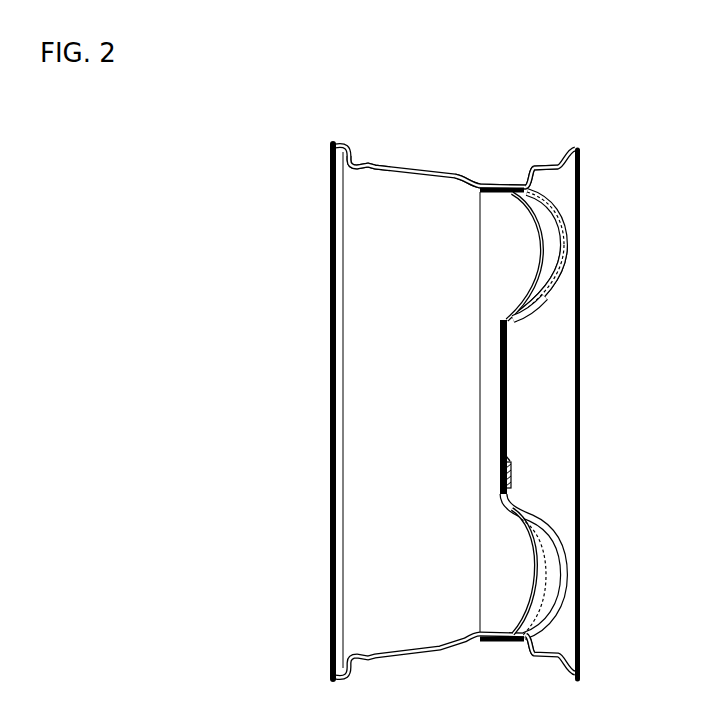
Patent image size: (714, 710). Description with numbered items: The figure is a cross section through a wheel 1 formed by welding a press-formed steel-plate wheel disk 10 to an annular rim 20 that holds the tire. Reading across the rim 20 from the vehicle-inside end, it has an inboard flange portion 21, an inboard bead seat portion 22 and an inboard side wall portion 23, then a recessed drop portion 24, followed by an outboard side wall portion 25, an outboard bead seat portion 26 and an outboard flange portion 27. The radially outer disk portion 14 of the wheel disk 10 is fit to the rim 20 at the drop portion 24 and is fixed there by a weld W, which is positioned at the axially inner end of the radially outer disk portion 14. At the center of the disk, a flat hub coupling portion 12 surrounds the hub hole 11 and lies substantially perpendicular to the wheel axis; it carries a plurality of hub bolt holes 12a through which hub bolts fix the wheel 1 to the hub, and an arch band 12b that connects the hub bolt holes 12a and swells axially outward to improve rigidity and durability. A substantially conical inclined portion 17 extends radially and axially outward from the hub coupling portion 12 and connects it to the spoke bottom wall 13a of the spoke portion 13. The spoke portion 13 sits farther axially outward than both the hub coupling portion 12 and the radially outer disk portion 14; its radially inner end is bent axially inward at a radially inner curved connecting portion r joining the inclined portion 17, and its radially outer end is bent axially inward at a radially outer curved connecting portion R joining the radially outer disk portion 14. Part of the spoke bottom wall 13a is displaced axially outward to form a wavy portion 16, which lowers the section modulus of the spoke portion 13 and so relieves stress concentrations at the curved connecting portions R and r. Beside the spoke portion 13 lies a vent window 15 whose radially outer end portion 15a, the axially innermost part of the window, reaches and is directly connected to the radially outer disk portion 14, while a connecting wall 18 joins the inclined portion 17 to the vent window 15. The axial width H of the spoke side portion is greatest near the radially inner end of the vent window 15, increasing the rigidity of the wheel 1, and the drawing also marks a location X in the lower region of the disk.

The wheel 1 is at (585, 170).
The wheel disk 10 is at (510, 330).
The hub hole 11 is at (508, 400).
The hub coupling portion 12 is at (508, 363).
The hub bolt holes 12a is at (514, 478).
The arch band 12b is at (509, 348).
The spoke portion 13 is at (552, 196).
The spoke bottom wall 13a is at (548, 268).
The radially outer disk portion 14 is at (522, 193).
The vent window 15 is at (567, 578).
The radially outer end portion of the vent window 15a is at (523, 640).
The wavy portion 16 is at (545, 230).
The inclined portion 17 is at (553, 317).
The connecting wall 18 is at (553, 525).
The rim 20 is at (406, 165).
The inboard flange portion 21 is at (334, 143).
The inboard bead seat portion 22 is at (367, 164).
The inboard side wall portion 23 is at (467, 174).
The drop portion 24 is at (493, 186).
The outboard side wall portion 25 is at (529, 168).
The outboard bead seat portion 26 is at (549, 165).
The outboard flange portion 27 is at (578, 146).
The radially outer curved connecting portion R is at (512, 195).
The axial width of the spoke side portion H is at (546, 284).
The radially inner curved connecting portion r is at (504, 319).
The weld W is at (473, 633).
The section X is at (548, 548).